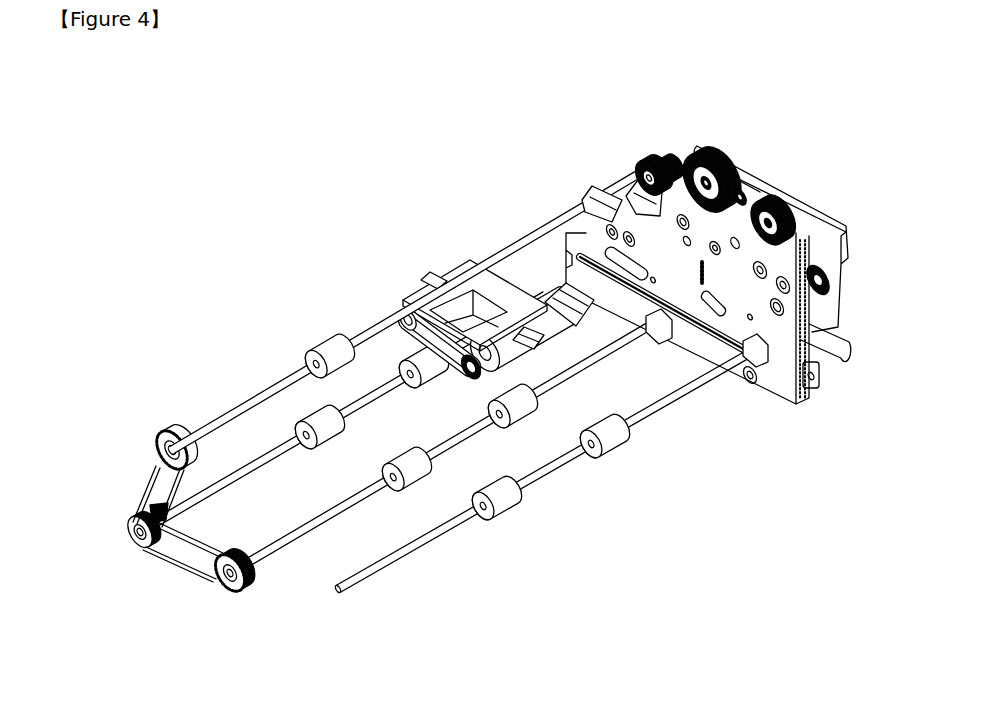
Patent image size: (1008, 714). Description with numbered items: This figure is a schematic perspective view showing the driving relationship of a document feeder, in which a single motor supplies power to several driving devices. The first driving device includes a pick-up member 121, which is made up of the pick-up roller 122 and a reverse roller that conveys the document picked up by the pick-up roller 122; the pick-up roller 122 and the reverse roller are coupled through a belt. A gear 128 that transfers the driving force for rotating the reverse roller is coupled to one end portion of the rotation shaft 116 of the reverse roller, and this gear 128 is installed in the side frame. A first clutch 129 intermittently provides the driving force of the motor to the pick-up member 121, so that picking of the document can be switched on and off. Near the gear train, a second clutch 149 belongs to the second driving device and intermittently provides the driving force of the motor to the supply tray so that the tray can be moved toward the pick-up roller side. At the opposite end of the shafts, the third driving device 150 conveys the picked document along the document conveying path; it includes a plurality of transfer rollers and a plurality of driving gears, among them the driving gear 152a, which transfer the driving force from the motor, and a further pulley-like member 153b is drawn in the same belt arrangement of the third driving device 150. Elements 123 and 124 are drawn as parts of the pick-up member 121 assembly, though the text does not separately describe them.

The rotation shaft 116 is at (550, 222).
The pick-up member 121 is at (487, 341).
The pick-up roller 122 is at (490, 369).
The link arm 123 is at (400, 305).
The roller holder frame 124 is at (427, 277).
The gear 128 is at (645, 160).
The first clutch 129 is at (685, 163).
The second clutch 149 is at (770, 185).
The third driving device 150 is at (189, 564).
The driving gear 152a is at (130, 549).
The pulley 153b is at (217, 593).